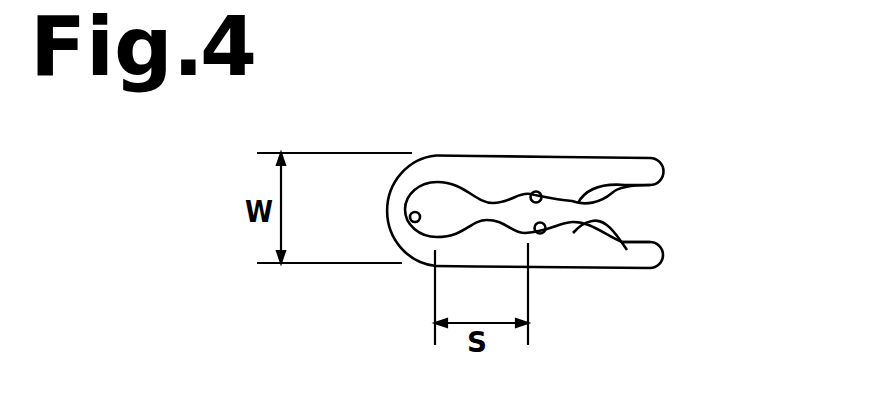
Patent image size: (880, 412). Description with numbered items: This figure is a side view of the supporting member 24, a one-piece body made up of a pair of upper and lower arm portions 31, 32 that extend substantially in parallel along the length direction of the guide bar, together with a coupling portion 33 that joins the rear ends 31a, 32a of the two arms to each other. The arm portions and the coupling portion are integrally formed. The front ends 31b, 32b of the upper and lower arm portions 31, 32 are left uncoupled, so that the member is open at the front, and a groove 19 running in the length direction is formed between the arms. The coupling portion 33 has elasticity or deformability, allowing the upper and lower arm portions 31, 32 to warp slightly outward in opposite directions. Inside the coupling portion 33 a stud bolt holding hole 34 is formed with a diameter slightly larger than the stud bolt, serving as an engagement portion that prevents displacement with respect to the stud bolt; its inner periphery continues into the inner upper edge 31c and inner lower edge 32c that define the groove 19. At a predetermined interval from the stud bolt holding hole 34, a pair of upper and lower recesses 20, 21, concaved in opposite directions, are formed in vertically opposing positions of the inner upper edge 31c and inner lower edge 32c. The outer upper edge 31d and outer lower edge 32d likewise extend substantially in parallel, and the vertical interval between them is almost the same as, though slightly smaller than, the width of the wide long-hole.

The groove 19 is at (636, 212).
The upper recess 20 is at (542, 196).
The lower recess 21 is at (553, 228).
The supporting member 24 is at (586, 146).
The upper arm portion 31 is at (528, 148).
The rear end of upper arm portion 31a is at (432, 166).
The front end of upper arm portion 31b is at (657, 172).
The inner upper edge 31c is at (578, 203).
The outer upper edge 31d is at (483, 159).
The lower arm portion 32 is at (551, 280).
The rear end of lower arm portion 32a is at (423, 248).
The front end of lower arm portion 32b is at (657, 257).
The inner lower edge 32c is at (627, 250).
The outer lower edge 32d is at (485, 268).
The coupling portion 33 is at (370, 214).
The stud bolt holding hole 34 is at (413, 224).